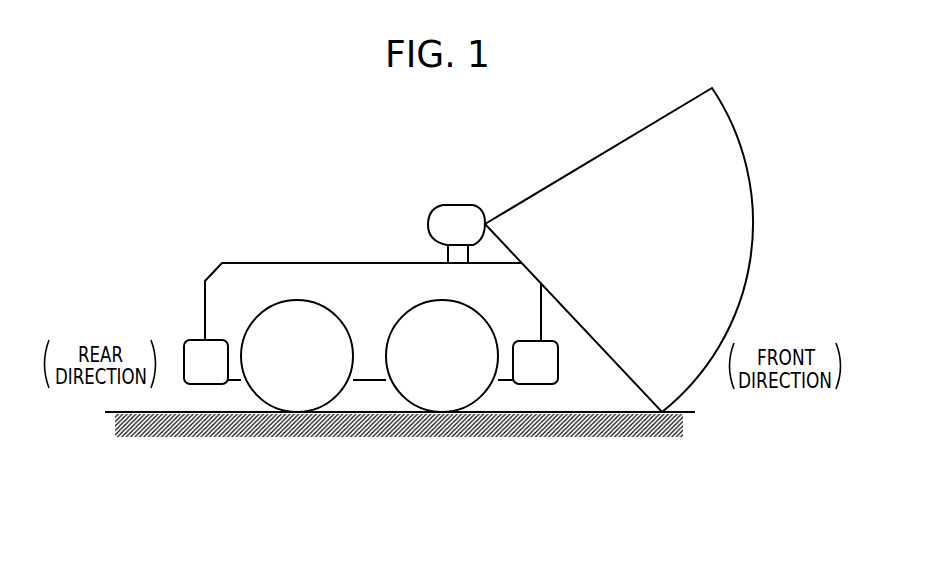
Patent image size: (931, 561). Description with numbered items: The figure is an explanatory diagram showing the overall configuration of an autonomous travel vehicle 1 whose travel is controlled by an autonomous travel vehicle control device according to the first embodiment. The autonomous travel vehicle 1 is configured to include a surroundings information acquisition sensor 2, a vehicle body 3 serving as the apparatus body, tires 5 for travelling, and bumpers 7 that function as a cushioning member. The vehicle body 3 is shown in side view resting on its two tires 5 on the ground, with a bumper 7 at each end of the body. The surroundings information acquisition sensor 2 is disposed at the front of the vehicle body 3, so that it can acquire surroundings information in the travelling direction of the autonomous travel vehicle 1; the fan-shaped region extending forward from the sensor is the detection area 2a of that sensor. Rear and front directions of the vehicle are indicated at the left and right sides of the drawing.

The autonomous travel vehicle 1 is at (453, 286).
The surroundings information acquisition sensor 2 is at (455, 217).
The detection area 2a is at (643, 148).
The vehicle body 3 is at (212, 315).
The tires 5 is at (297, 401).
The bumpers 7 is at (207, 378).